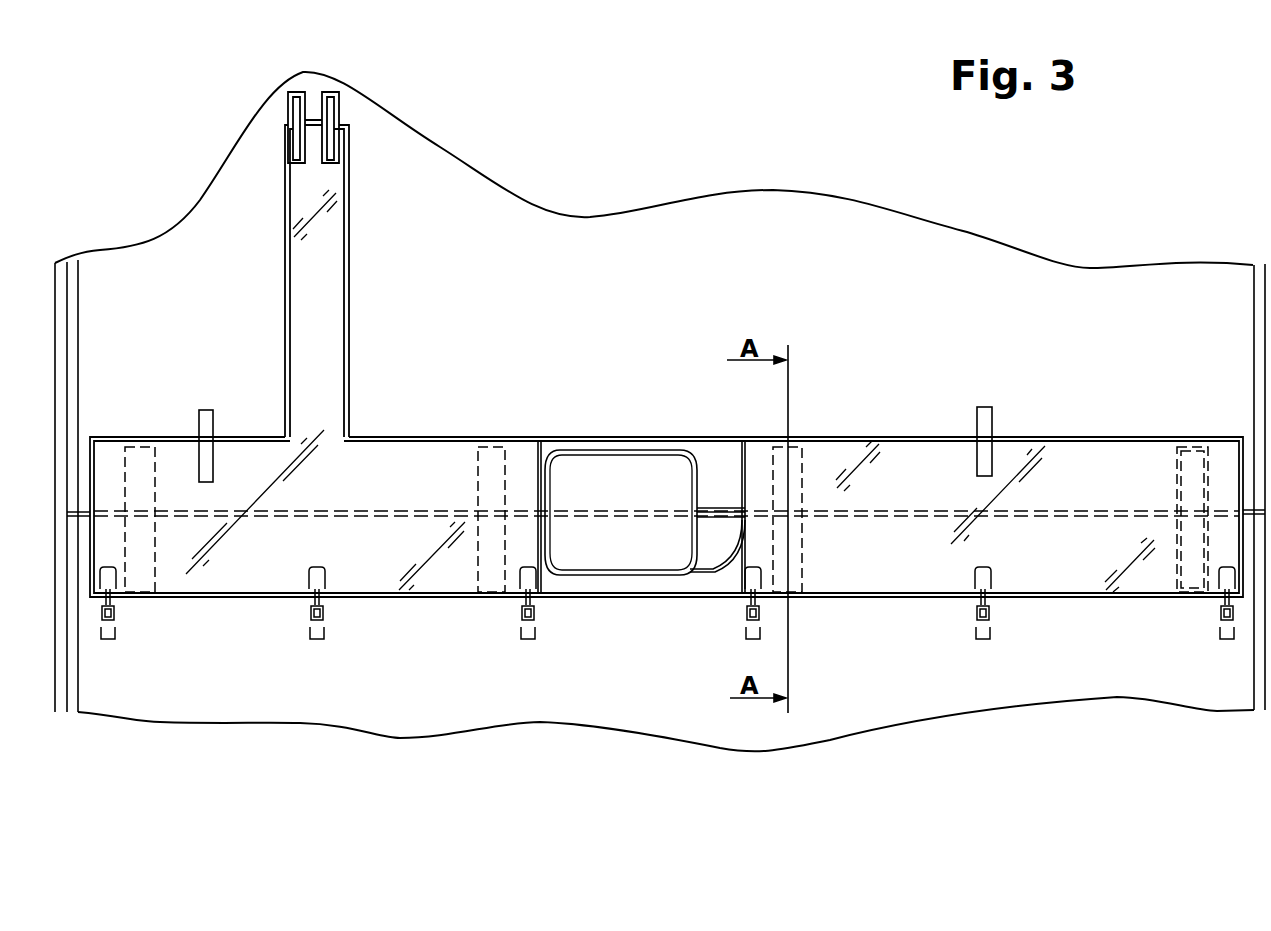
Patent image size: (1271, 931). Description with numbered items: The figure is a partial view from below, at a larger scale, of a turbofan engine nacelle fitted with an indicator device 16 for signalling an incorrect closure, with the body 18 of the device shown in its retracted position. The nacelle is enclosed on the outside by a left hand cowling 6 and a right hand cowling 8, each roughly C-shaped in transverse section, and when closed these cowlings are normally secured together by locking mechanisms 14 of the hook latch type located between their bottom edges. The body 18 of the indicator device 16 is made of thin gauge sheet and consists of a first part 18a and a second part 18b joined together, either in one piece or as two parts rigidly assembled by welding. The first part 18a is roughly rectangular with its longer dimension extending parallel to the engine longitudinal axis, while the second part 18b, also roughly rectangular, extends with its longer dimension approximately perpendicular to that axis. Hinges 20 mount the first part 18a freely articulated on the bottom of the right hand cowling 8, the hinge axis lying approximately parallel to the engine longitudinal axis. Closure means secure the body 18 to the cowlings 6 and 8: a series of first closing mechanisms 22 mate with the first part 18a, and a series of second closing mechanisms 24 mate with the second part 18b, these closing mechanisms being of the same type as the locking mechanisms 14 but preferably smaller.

The left hand fan cowling 6 is at (213, 240).
The right hand fan cowling 8 is at (253, 677).
The locking mechanism 14 is at (1180, 455).
The indicator device 16 is at (660, 404).
The body 18 is at (666, 396).
The first part 18a is at (407, 468).
The second part 18b is at (318, 292).
The hinge 20 is at (752, 627).
The first closing mechanism 22 is at (203, 418).
The second closing mechanism 24 is at (332, 110).